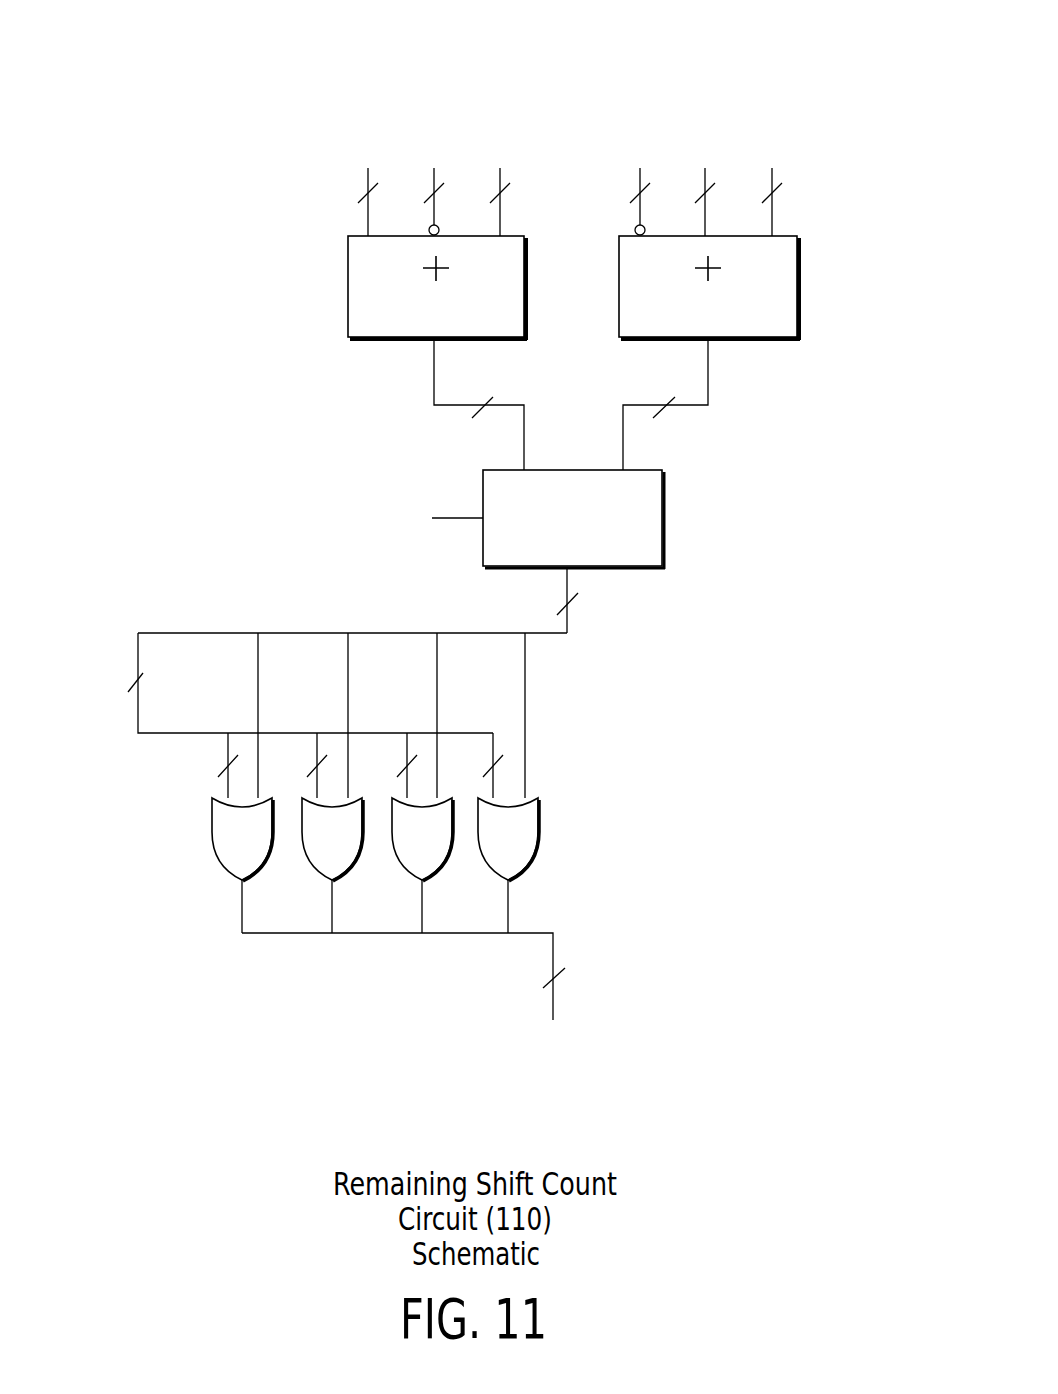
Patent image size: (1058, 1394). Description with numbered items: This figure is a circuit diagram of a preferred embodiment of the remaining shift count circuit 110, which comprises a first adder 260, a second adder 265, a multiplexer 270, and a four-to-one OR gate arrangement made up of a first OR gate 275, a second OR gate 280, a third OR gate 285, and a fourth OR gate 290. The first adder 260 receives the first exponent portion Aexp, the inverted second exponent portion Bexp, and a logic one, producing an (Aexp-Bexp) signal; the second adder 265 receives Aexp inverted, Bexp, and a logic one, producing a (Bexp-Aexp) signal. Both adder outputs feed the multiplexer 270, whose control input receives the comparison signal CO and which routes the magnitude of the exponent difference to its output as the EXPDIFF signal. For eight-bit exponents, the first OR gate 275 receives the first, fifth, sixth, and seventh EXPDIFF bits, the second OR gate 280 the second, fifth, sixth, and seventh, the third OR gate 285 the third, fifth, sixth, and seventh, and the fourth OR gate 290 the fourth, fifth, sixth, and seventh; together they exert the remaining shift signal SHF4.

The remaining shift count circuit 110 is at (780, 57).
The first adder 260 is at (460, 325).
The second adder 265 is at (732, 325).
The multiplexer 270 is at (594, 553).
The first OR gate 275 is at (530, 845).
The second OR gate 280 is at (444, 845).
The third OR gate 285 is at (354, 845).
The fourth OR gate 290 is at (264, 845).